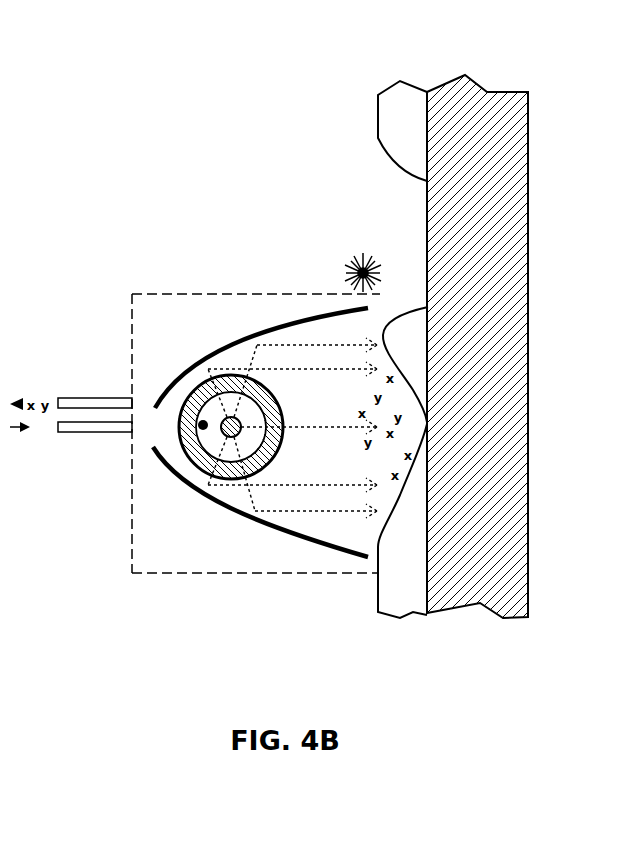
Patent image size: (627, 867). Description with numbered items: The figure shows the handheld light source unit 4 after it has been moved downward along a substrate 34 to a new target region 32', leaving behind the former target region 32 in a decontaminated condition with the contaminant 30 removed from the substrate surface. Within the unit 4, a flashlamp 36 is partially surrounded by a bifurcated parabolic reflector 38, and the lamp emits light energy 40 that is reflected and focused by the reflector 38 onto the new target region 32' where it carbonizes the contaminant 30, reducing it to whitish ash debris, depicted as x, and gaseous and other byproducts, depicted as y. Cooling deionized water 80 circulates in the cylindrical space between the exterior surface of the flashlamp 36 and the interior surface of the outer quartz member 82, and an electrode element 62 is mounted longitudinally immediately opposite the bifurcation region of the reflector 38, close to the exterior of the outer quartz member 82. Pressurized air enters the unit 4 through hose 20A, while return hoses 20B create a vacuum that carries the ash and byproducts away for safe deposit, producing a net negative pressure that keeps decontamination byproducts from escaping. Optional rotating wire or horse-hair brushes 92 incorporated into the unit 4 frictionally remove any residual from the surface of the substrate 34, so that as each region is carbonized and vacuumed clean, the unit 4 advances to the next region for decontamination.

The handheld light source unit 4 is at (243, 294).
The hose 20A is at (83, 428).
The pressurized air return hoses 20B is at (85, 402).
The contaminant 30 is at (413, 97).
The target region 32 is at (354, 240).
The new target region 32' is at (505, 366).
The substrate 34 is at (498, 105).
The flashlamp 36 is at (240, 420).
The bifurcated parabolic reflector 38 is at (233, 348).
The light energy 40 is at (333, 462).
The electrode element 62 is at (178, 417).
The cooling deionized water 80 is at (200, 438).
The outer quartz member 82 is at (258, 462).
The rotating brushes 92 is at (342, 272).